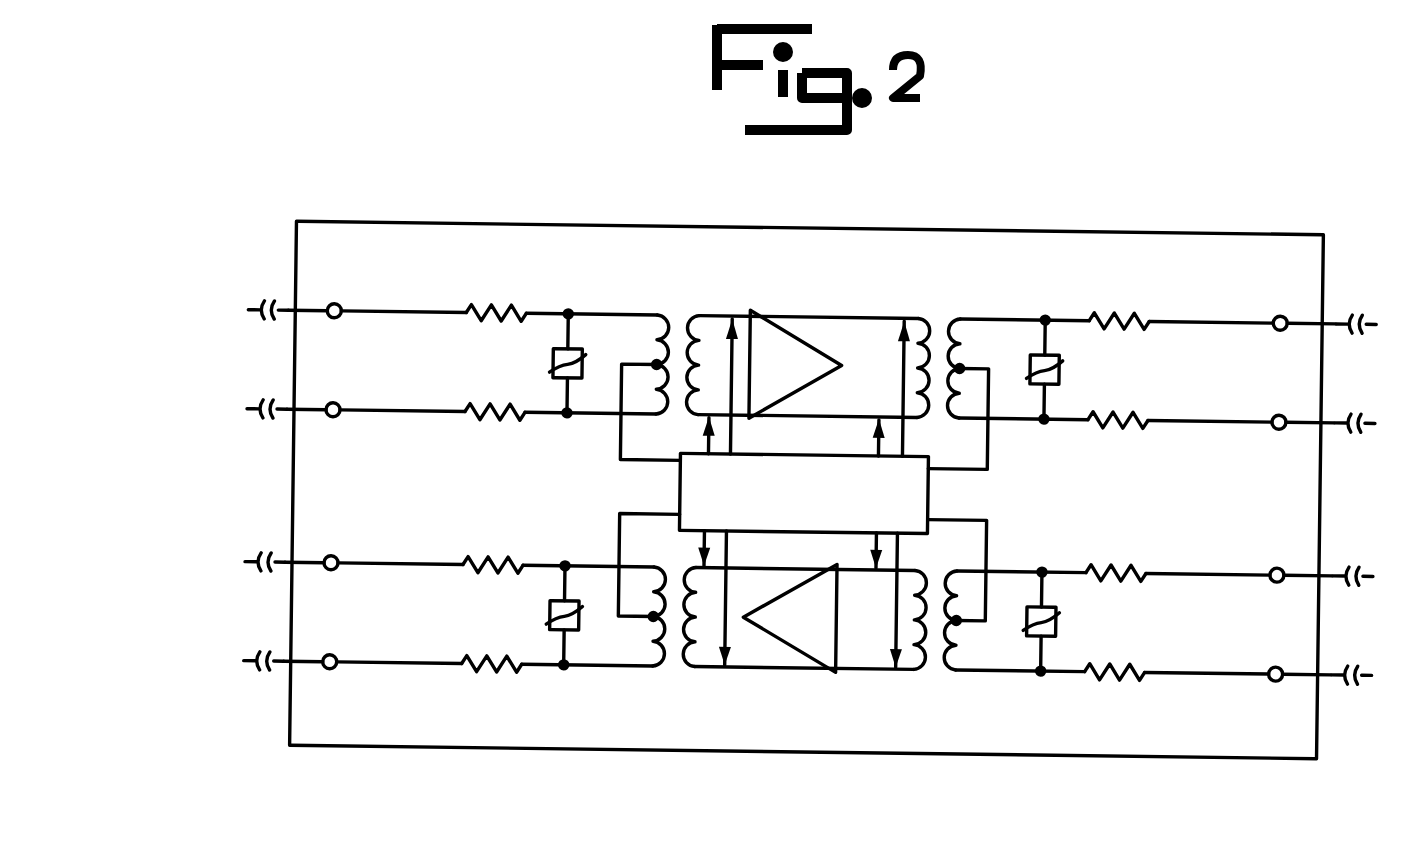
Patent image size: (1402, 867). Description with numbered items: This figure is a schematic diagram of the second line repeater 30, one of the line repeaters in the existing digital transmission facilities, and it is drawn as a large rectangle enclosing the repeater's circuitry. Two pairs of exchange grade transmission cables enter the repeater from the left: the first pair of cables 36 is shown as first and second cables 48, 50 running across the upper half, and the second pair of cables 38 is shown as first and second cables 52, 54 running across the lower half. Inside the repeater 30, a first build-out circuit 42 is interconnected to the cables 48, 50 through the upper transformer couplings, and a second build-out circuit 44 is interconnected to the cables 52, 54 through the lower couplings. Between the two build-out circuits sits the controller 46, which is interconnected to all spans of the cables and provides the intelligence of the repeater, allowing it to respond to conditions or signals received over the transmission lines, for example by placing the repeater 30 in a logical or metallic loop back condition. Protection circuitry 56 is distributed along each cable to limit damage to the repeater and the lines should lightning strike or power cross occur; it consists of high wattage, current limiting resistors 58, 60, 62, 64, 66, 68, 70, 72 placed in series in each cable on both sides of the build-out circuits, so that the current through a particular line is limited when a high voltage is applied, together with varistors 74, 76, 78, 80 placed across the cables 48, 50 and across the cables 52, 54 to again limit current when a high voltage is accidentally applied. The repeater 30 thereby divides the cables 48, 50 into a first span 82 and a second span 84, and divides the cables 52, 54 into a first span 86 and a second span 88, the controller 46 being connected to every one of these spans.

The second line repeater 30 is at (1222, 229).
The first pair of exchange grade transmission cables 36 is at (212, 368).
The second pair of exchange grade transmission cables 38 is at (212, 621).
The first build-out circuit 42 is at (819, 353).
The second build-out circuit 44 is at (790, 595).
The controller 46 is at (928, 476).
The first cable 48 is at (365, 317).
The second cable 50 is at (363, 416).
The first cable 52 is at (368, 569).
The second cable 54 is at (372, 668).
The protection circuitry 56 is at (1200, 386).
The current limiting resistor 58 is at (508, 309).
The current limiting resistor 60 is at (1130, 309).
The current limiting resistor 62 is at (497, 407).
The current limiting resistor 64 is at (1107, 408).
The current limiting resistor 66 is at (482, 560).
The current limiting resistor 68 is at (1115, 560).
The current limiting resistor 70 is at (482, 660).
The current limiting resistor 72 is at (1107, 658).
The varistor 74 is at (557, 356).
The varistor 76 is at (1061, 358).
The varistor 78 is at (553, 604).
The varistor 80 is at (1059, 606).
The first span 82 is at (406, 357).
The second span 84 is at (1183, 355).
The first span 86 is at (1202, 628).
The second span 88 is at (422, 636).